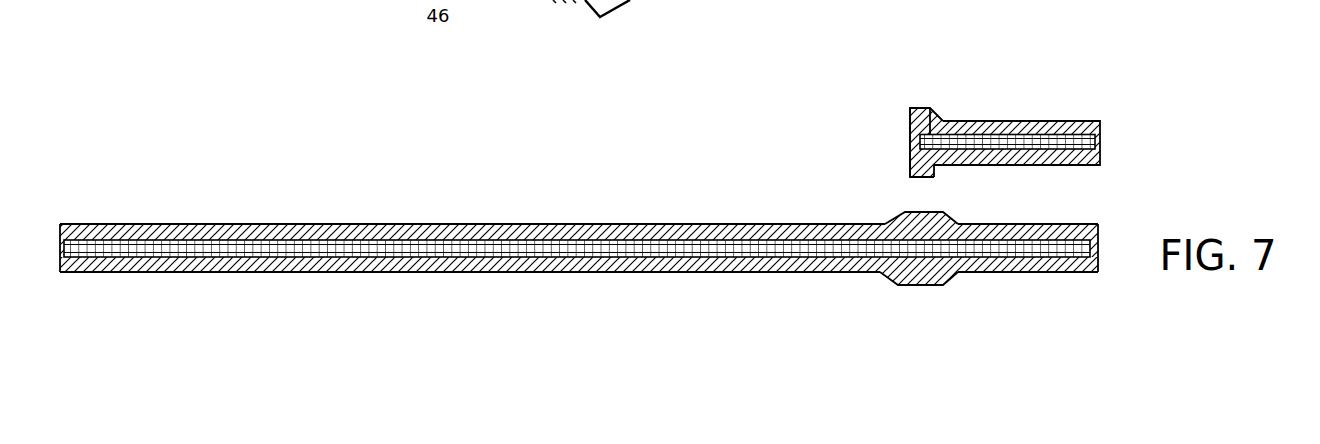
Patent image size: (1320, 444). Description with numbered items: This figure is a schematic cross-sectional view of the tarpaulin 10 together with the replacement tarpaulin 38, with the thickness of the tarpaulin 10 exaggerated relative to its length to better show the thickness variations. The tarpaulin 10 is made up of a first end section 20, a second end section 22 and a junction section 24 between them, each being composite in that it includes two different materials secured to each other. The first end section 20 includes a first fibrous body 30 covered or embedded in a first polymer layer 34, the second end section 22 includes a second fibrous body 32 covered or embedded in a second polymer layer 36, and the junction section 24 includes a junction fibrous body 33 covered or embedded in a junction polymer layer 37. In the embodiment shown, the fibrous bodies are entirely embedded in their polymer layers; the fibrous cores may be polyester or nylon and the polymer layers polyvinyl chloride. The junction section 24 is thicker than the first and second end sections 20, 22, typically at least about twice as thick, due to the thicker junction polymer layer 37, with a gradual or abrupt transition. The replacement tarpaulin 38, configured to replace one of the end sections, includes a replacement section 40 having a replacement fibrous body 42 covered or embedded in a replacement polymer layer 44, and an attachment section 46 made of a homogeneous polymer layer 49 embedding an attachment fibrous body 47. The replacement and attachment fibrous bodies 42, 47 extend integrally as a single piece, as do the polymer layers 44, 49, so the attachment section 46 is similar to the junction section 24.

The tarpaulin 10 is at (335, 183).
The first end section 20 is at (520, 220).
The second end section 22 is at (1018, 273).
The junction section 24 is at (910, 265).
The first fibrous body 30 is at (700, 236).
The second fibrous body 32 is at (1047, 248).
The junction fibrous body 33 is at (924, 247).
The first polymer layer 34 is at (831, 232).
The second polymer layer 36 is at (1006, 238).
The junction polymer layer 37 is at (917, 223).
The replacement tarpaulin 38 is at (1043, 57).
The replacement section 40 is at (1017, 119).
The replacement fibrous body 42 is at (1048, 142).
The replacement polymer layer 44 is at (1028, 128).
The attachment section 46 is at (912, 112).
The attachment fibrous body 47 is at (926, 107).
The homogeneous polymer layer 49 is at (911, 127).